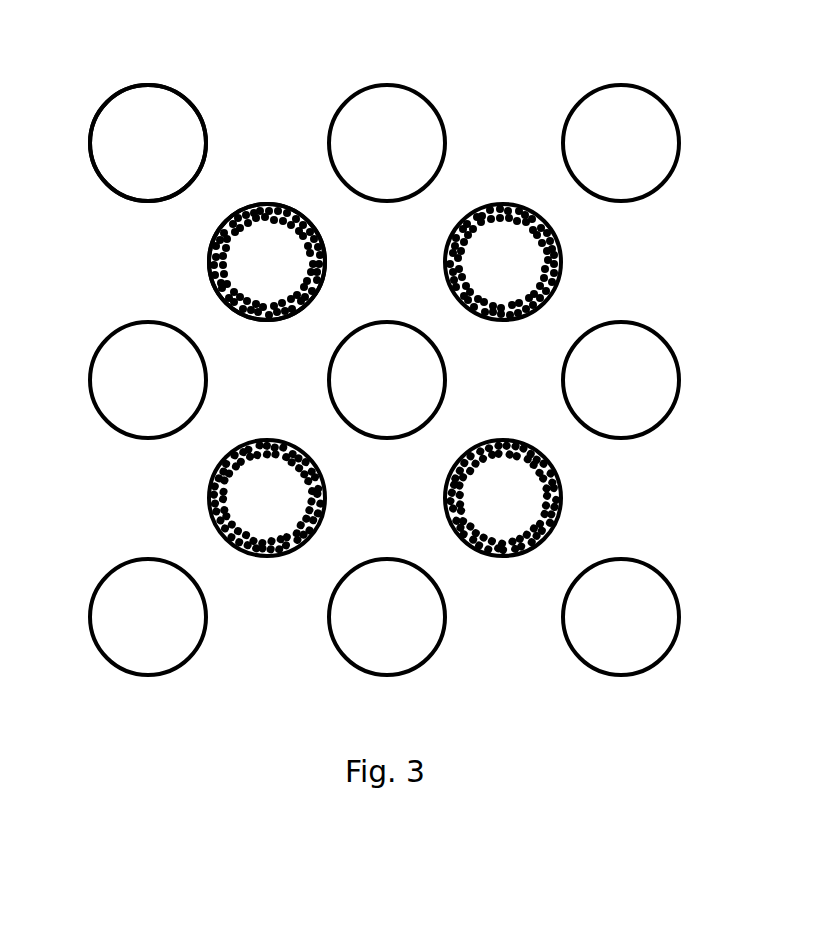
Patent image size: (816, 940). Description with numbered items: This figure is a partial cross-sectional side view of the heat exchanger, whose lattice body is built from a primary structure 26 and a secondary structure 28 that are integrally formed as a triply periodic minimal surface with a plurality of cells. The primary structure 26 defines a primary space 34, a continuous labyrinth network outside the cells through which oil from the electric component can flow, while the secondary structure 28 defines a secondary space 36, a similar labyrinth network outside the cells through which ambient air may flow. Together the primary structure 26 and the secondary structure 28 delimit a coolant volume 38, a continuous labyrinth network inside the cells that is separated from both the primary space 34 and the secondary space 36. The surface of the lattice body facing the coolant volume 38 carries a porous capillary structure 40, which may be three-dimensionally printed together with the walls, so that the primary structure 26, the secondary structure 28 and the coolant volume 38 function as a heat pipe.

The primary structure 26 is at (358, 345).
The secondary structure 28 is at (418, 90).
The primary space 34 is at (256, 145).
The secondary space 36 is at (147, 144).
The coolant volume 38 is at (284, 274).
The capillary structure 40 is at (458, 277).